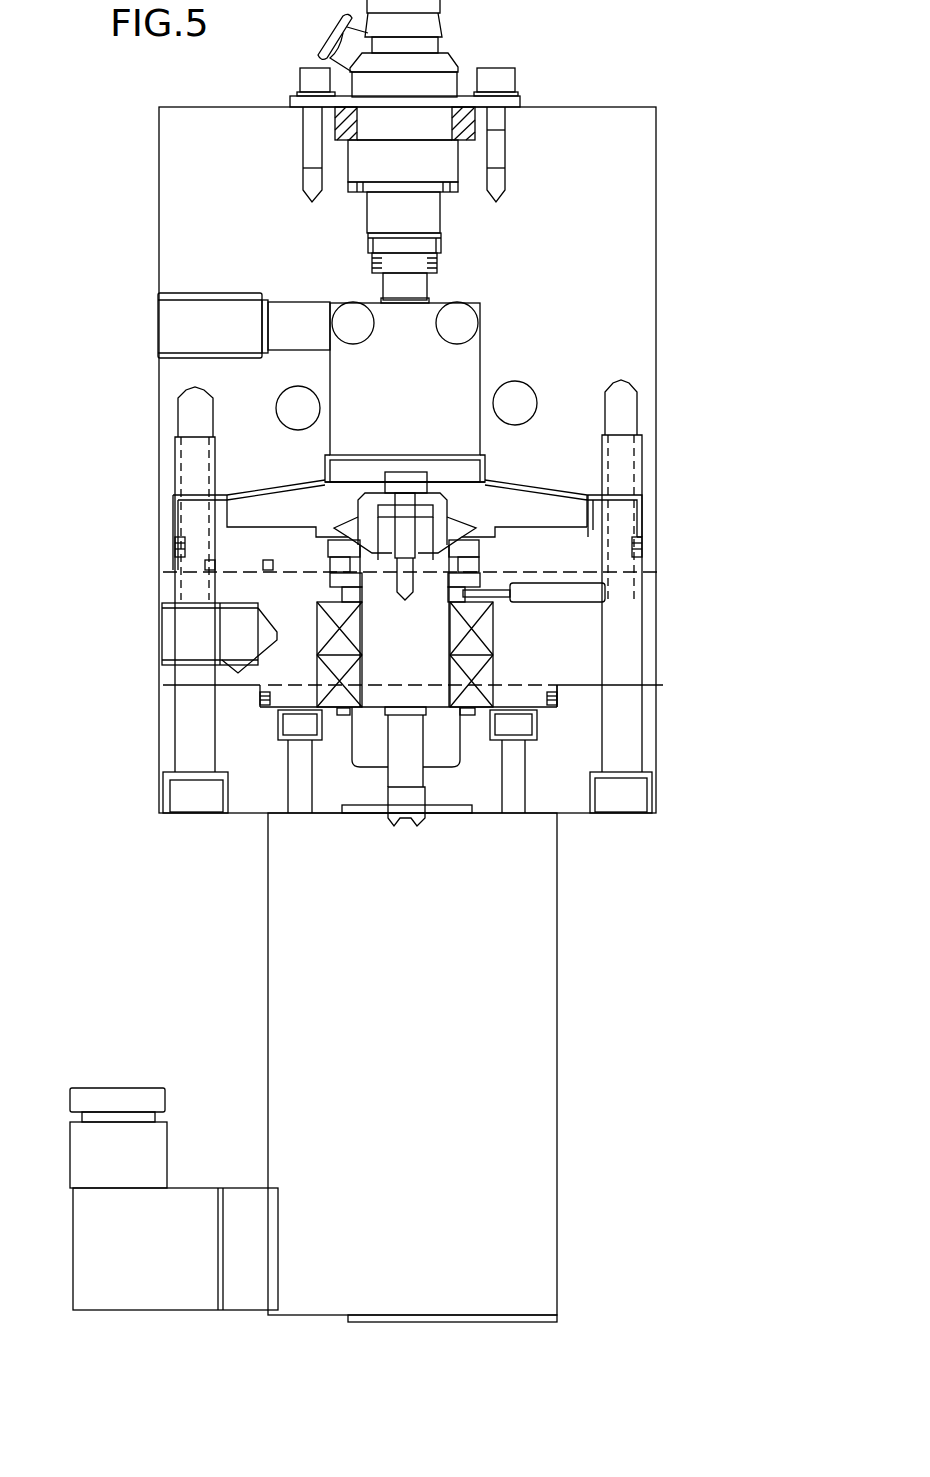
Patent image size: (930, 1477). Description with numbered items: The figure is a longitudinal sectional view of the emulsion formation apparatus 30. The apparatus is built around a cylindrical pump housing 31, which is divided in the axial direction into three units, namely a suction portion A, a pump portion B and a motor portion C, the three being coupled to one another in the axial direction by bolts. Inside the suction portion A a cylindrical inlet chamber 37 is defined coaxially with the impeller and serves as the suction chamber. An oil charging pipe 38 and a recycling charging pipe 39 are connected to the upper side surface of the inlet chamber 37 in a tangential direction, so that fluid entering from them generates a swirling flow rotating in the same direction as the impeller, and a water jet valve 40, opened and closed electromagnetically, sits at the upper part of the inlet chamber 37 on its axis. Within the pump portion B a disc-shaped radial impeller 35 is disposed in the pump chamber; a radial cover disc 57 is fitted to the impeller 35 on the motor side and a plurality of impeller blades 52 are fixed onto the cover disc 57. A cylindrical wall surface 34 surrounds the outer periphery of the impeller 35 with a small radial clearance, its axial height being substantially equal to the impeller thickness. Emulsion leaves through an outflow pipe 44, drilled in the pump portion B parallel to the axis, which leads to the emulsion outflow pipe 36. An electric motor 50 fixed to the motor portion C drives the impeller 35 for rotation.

The emulsion formation apparatus 30 is at (673, 810).
The pump housing 31 is at (175, 218).
The cylindrical wall surface 34 is at (598, 512).
The radial impeller 35 is at (248, 492).
The emulsion outflow pipe 36 is at (170, 628).
The inlet chamber 37 is at (470, 362).
The oil charging pipe 38 is at (178, 333).
The recycling charging pipe 39 is at (465, 312).
The water jet valve 40 is at (447, 80).
The outflow pipe 44 is at (232, 592).
The electric motor 50 is at (297, 960).
The impeller blades 52 is at (553, 507).
The radial cover disc 57 is at (283, 540).
The suction portion A is at (632, 300).
The pump portion B is at (647, 650).
The motor portion C is at (650, 720).